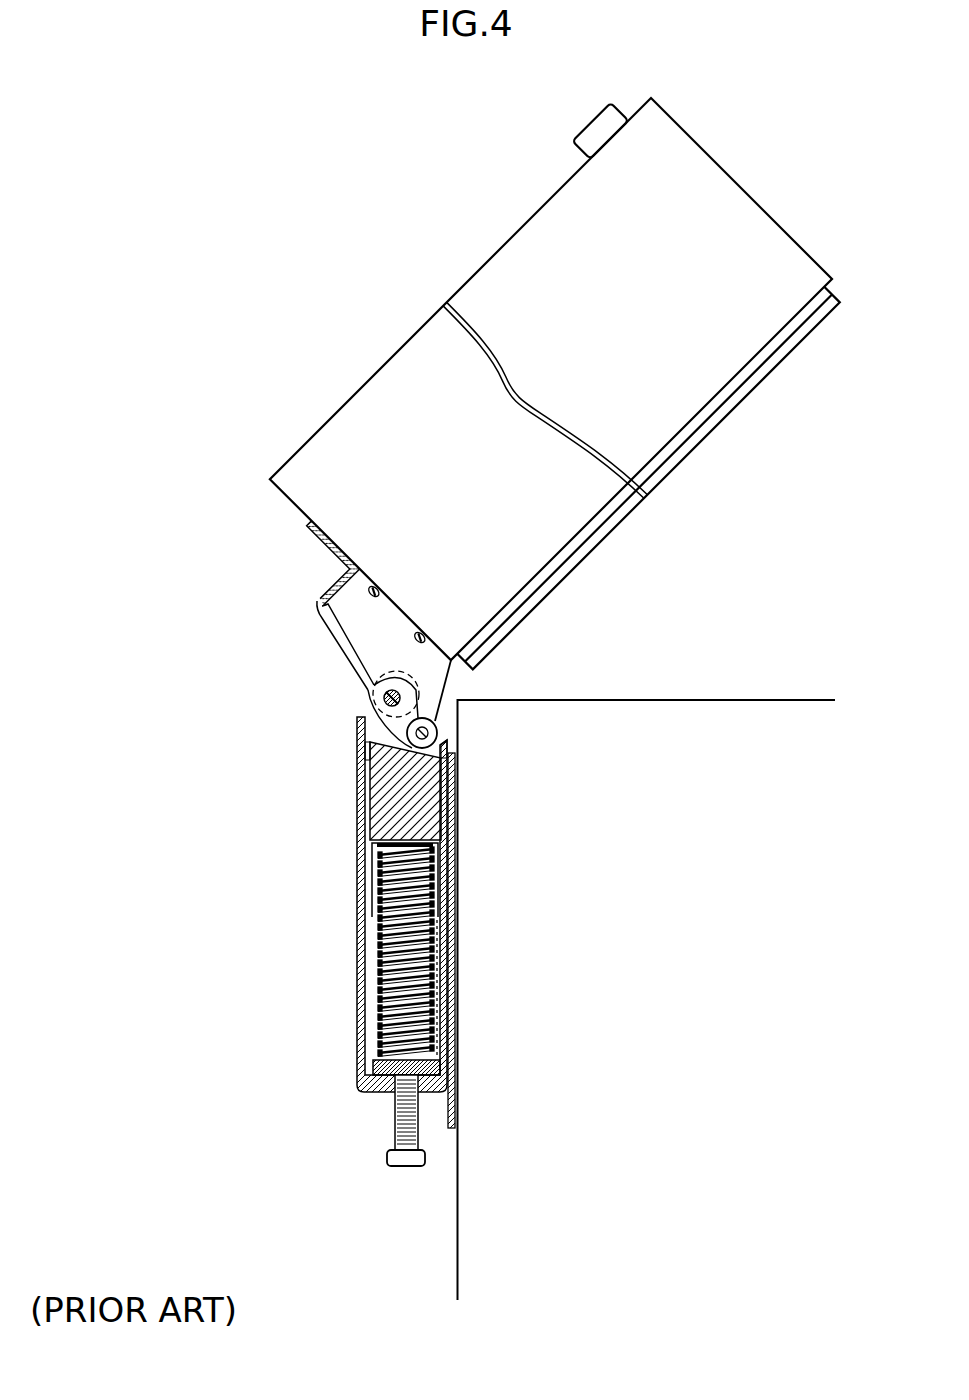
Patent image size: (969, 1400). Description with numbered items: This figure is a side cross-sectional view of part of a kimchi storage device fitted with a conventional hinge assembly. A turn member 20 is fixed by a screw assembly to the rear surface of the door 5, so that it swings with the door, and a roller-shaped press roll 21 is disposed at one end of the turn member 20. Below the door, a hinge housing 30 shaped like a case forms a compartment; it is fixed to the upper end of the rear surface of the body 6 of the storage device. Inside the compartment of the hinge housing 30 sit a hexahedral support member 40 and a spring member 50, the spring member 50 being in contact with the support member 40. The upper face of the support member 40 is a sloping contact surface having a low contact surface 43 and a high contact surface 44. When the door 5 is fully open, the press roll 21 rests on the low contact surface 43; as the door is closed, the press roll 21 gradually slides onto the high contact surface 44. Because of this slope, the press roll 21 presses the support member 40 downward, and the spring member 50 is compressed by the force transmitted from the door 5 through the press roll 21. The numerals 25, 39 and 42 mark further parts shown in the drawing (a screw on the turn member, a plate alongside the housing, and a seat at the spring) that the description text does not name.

The door 5 is at (361, 409).
The body 6 is at (652, 700).
The turn member 20 is at (350, 656).
The press roll 21 is at (437, 718).
The fixing screw 25 is at (390, 688).
The hinge housing 30 is at (363, 840).
The support plate 39 is at (450, 1130).
The support member 40 is at (380, 785).
The spring seat 42 is at (378, 898).
The low contact surface 43 is at (437, 738).
The high contact surface 44 is at (370, 728).
The spring member 50 is at (378, 947).